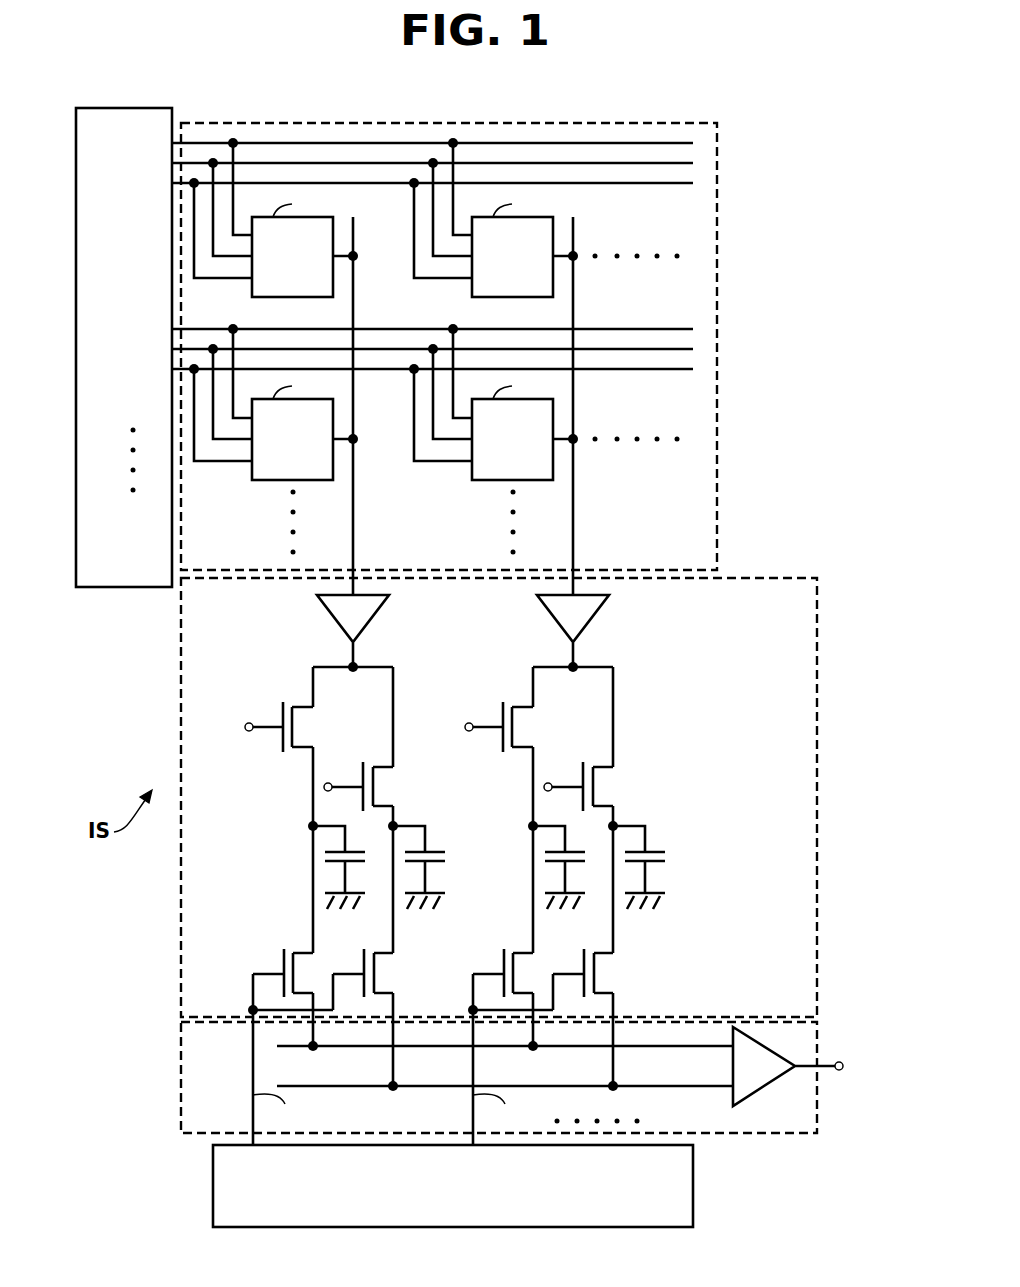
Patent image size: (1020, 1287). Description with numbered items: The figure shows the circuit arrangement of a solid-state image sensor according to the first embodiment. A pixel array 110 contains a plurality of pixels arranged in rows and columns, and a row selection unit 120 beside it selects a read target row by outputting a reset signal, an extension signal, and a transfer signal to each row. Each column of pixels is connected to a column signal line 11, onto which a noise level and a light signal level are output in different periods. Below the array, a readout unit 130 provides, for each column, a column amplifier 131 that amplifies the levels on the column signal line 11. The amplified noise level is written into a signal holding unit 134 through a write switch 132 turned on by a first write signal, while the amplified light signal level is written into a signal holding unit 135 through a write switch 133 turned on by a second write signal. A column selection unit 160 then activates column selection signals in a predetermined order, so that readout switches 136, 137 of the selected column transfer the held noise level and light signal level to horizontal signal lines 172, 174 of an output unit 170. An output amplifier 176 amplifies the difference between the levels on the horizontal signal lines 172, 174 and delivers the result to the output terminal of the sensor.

The column signal line 11 is at (353, 527).
The pixel array 110 is at (483, 123).
The row selection unit 120 is at (121, 108).
The readout unit 130 is at (792, 578).
The column amplifier 131 is at (377, 626).
The write switch 132 is at (302, 730).
The write switch 133 is at (385, 789).
The signal holding unit 134 is at (363, 866).
The signal holding unit 135 is at (443, 866).
The readout switch 136 is at (293, 943).
The readout switch 137 is at (392, 973).
The column selection unit 160 is at (693, 1191).
The output unit 170 is at (535, 1077).
The horizontal signal line 172 is at (578, 1048).
The horizontal signal line 174 is at (665, 1086).
The output amplifier 176 is at (766, 1086).